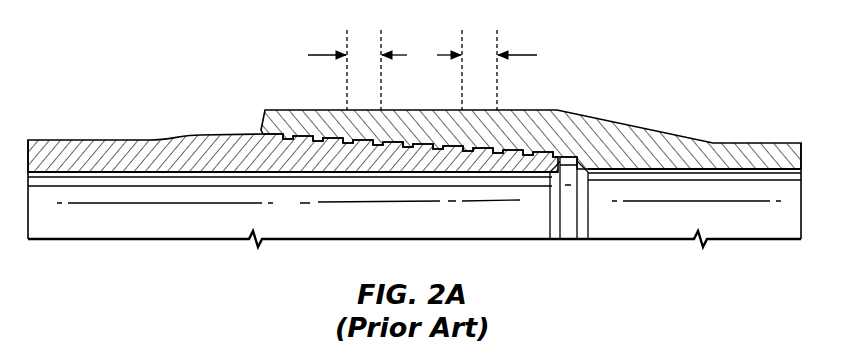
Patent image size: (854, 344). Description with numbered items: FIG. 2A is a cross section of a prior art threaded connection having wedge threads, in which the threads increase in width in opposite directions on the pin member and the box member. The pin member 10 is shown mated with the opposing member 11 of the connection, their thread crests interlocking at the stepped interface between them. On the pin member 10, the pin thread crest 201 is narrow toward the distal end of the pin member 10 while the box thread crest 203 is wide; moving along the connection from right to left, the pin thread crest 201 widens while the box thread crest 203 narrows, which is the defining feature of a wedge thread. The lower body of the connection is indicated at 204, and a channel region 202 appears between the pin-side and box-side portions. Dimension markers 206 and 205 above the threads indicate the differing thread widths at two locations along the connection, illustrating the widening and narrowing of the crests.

The pin member 10 is at (101, 140).
The second substrate portion 11 is at (745, 143).
The pin thread crest 201 is at (357, 140).
The channel / via 202 is at (545, 177).
The box thread crest 203 is at (537, 152).
The substrate base 204 is at (178, 241).
The dimension width 205 is at (523, 55).
The dimension width 206 is at (323, 54).